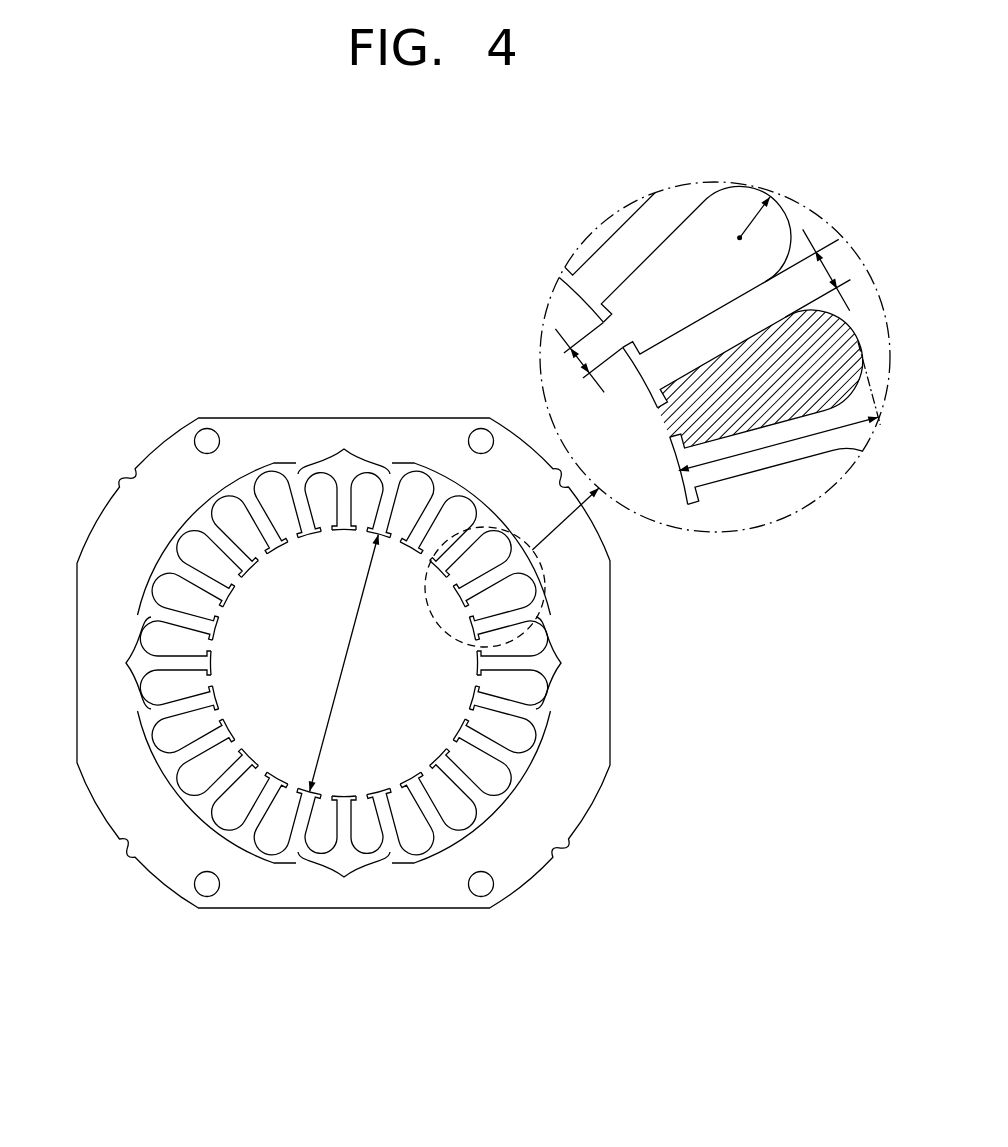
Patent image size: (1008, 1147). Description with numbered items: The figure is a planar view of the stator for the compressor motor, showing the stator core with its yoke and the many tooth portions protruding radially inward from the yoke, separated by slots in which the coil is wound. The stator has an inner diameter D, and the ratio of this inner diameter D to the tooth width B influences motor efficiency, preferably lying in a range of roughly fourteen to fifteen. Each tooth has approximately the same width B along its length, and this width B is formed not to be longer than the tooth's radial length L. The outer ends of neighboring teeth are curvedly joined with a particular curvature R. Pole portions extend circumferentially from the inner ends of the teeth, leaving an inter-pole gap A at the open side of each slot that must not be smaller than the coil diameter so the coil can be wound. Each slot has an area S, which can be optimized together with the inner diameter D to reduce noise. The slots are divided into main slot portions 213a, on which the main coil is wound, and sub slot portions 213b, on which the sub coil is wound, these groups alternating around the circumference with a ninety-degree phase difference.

The main slot portion 213a is at (628, 663).
The sub slot portion 213b is at (344, 940).
The inner diameter of the stator D is at (344, 663).
The curvature R is at (743, 223).
The inter-pole gap A is at (589, 358).
The width of tooth portion B is at (807, 273).
The area of the slot portion S is at (709, 330).
The radial length of tooth portion L is at (780, 407).